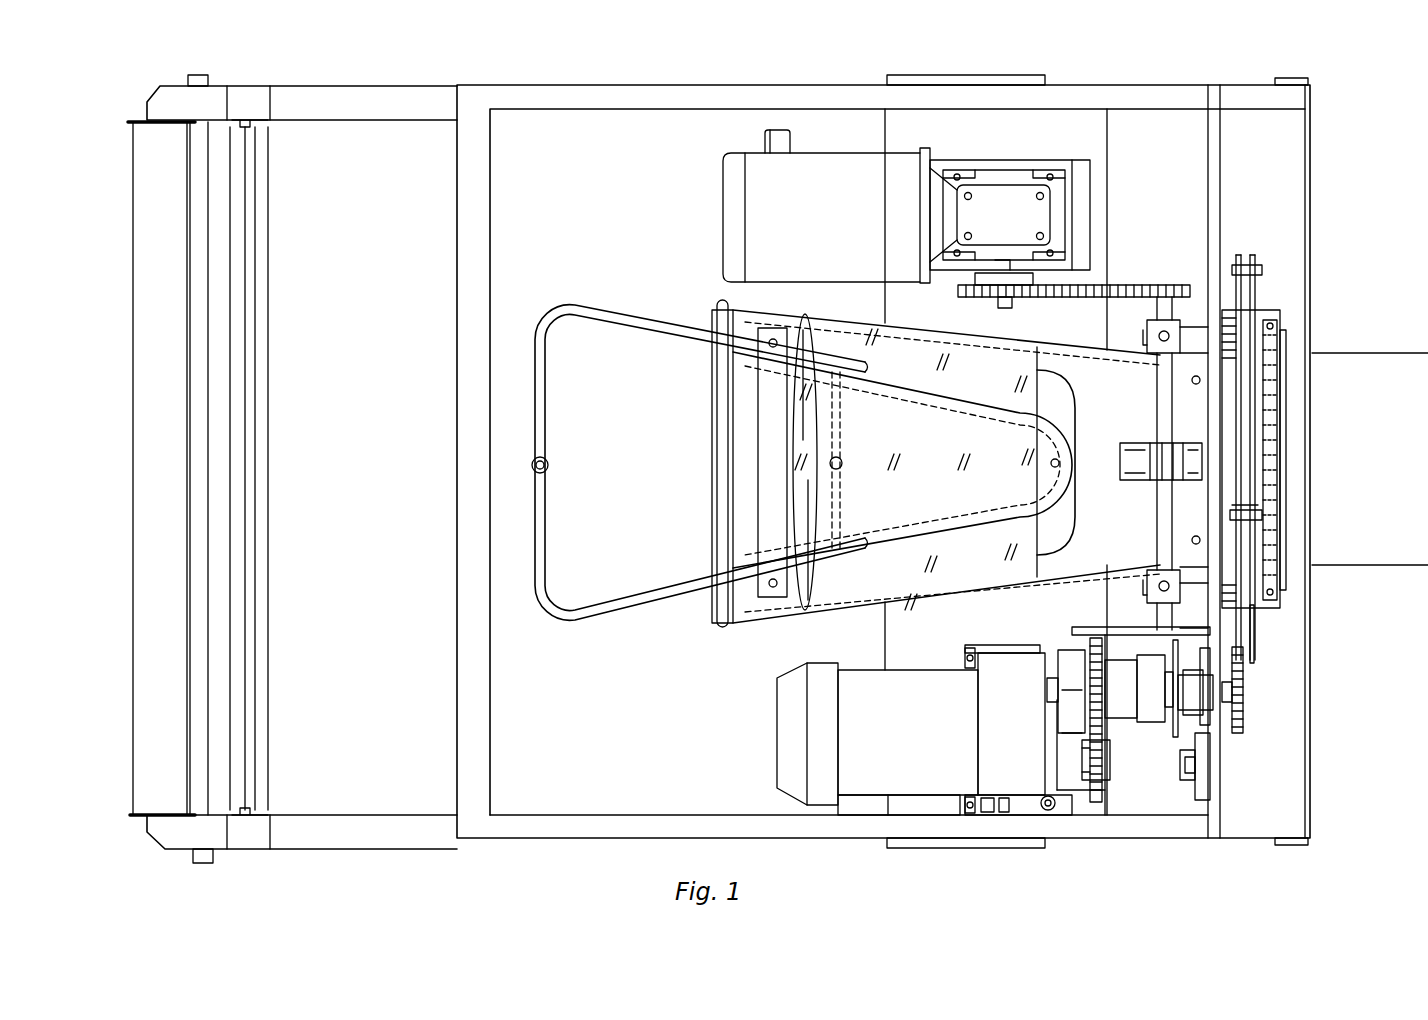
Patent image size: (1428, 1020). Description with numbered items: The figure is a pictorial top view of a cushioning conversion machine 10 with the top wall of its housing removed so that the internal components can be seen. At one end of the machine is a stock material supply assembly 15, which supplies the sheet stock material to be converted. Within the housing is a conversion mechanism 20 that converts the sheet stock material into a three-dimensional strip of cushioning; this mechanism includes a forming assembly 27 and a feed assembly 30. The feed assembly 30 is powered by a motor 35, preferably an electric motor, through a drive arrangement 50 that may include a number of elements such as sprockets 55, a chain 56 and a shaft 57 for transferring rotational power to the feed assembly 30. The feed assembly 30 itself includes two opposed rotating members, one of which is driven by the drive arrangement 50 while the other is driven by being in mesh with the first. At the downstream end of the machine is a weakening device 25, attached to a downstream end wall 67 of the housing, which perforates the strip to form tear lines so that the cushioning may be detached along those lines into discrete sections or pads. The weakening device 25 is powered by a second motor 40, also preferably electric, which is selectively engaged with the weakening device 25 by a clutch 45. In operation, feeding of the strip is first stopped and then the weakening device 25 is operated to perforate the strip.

The cushioning conversion machine 10 is at (1344, 141).
The stock material supply assembly 15 is at (334, 68).
The conversion mechanism 20 is at (578, 183).
The weakening device 25 is at (1253, 240).
The forming assembly 27 is at (691, 668).
The feed assembly 30 is at (1132, 516).
The motor 35 is at (775, 218).
The motor 40 is at (820, 747).
The clutch 45 is at (1135, 752).
The drive arrangement 50 is at (1135, 230).
The sprockets 55 is at (1162, 263).
The chain 56 is at (1093, 290).
The shaft 57 is at (1160, 432).
The downstream end wall 67 is at (1222, 782).